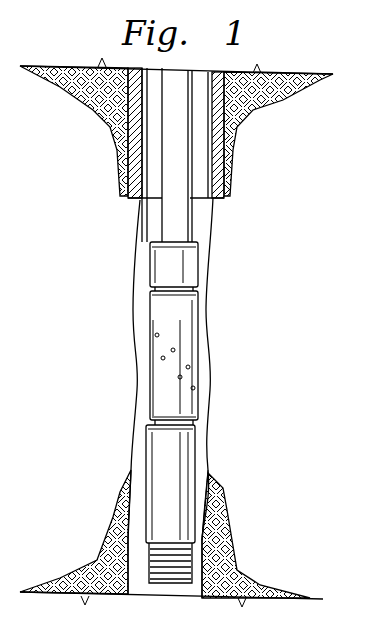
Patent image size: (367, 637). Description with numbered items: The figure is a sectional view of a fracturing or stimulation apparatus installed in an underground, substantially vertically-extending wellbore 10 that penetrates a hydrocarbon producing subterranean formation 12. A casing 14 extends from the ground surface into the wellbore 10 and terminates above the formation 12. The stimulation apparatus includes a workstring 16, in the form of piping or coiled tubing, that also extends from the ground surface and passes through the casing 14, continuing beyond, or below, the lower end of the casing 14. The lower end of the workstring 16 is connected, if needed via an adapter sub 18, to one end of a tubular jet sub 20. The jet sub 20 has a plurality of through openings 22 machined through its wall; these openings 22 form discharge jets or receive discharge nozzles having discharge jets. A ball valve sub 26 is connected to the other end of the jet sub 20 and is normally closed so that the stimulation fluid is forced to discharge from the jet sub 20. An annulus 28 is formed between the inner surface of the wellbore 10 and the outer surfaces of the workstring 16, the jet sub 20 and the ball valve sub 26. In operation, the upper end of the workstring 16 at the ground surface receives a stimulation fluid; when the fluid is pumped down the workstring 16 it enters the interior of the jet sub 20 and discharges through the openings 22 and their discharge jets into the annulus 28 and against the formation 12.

The wellbore 10 is at (214, 221).
The subterranean formation 12 is at (230, 543).
The casing 14 is at (219, 148).
The workstring 16 is at (163, 220).
The adapter sub 18 is at (193, 265).
The jet sub 20 is at (203, 382).
The through openings 22 is at (173, 348).
The ball valve sub 26 is at (144, 438).
The annulus 28 is at (207, 465).